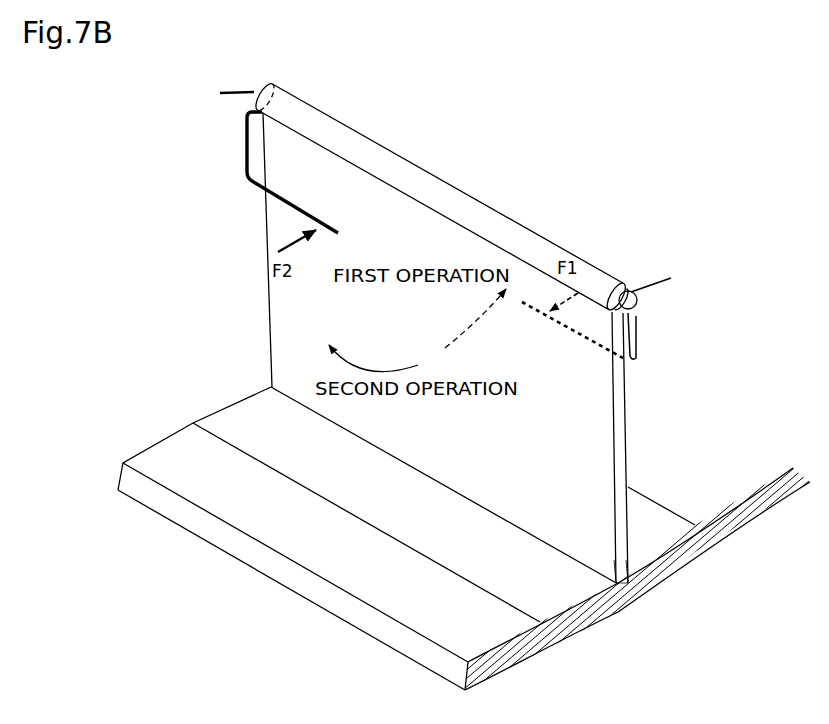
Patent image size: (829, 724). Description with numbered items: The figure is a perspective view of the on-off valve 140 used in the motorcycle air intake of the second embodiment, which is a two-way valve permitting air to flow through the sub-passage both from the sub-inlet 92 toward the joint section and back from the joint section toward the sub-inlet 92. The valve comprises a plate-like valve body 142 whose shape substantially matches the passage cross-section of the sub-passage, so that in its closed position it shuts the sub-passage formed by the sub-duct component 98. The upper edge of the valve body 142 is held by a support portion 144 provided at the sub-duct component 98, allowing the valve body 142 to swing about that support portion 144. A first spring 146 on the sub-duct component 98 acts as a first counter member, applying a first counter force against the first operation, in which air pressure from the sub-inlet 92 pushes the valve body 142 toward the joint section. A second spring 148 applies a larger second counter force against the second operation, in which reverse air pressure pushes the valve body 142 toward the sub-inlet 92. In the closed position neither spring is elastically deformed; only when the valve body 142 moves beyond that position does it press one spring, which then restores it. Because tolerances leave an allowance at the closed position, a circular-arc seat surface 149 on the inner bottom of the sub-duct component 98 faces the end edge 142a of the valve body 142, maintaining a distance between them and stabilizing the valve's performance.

The sub-inlet 92 is at (270, 488).
The sub-duct component 98 is at (734, 540).
The on-off valve 140 is at (260, 297).
The valve body 142 is at (288, 337).
The end edge of the valve body 142a is at (624, 582).
The support portion 144 is at (637, 302).
The first spring 146 is at (578, 335).
The second spring 148 is at (290, 206).
The seat surface 149 is at (547, 585).